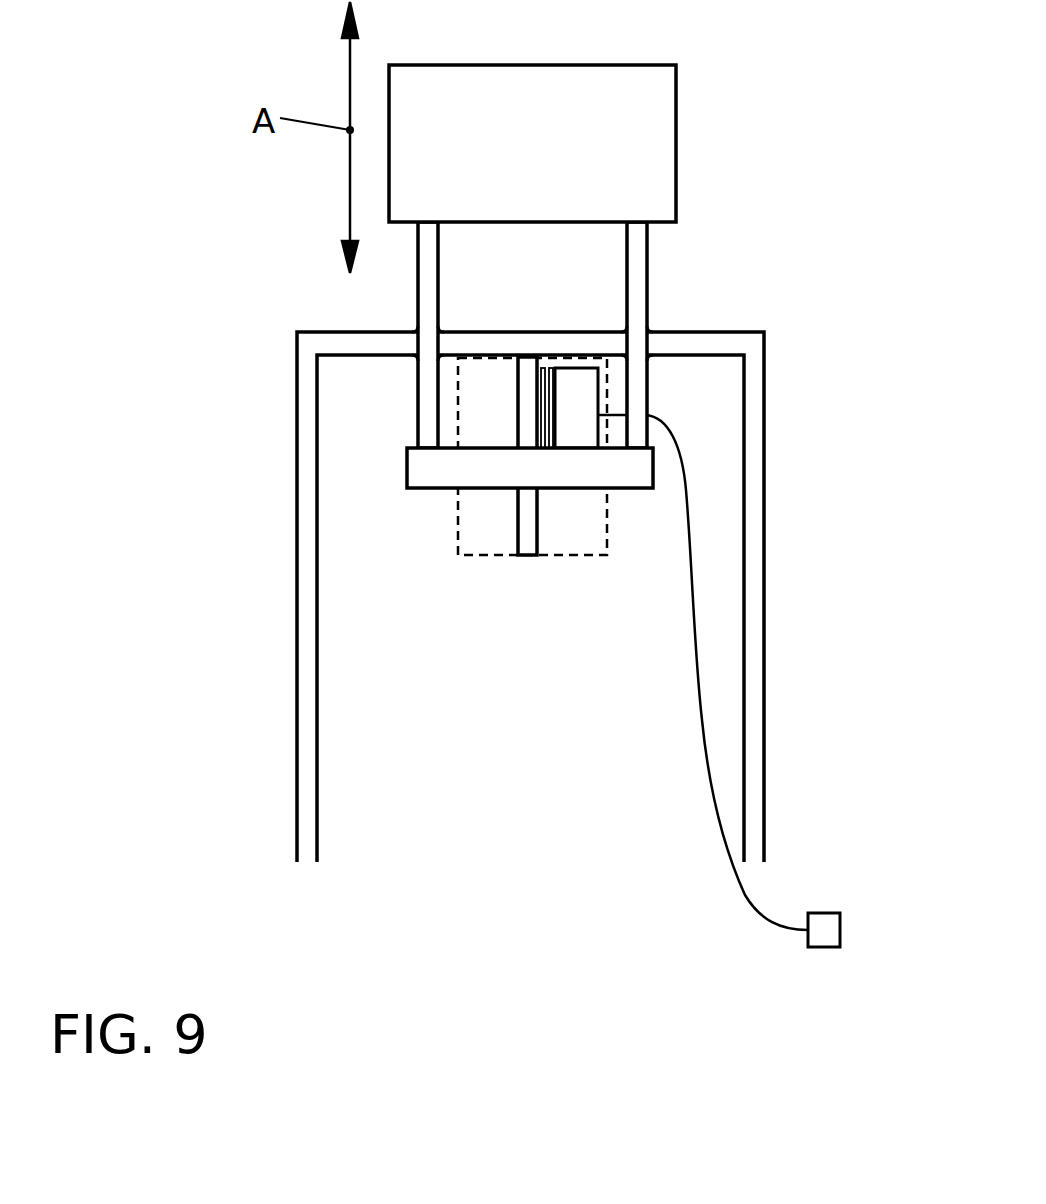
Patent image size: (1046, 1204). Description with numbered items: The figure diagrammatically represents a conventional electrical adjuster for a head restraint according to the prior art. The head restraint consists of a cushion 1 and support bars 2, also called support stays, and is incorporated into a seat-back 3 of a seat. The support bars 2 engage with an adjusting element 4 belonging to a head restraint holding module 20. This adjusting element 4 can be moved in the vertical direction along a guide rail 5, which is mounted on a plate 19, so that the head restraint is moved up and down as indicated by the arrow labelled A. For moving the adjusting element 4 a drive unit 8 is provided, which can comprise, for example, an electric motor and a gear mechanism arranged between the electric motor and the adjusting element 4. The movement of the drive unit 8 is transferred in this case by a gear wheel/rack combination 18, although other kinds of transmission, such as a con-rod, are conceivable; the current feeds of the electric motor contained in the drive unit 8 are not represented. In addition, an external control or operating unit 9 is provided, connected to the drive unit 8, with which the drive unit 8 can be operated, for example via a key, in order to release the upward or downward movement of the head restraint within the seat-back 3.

The cushion 1 is at (658, 153).
The support bars 2 is at (427, 285).
The seat-back 3 is at (757, 457).
The adjusting element 4 is at (418, 477).
The guide rail 5 is at (533, 535).
The drive unit 8 is at (575, 377).
The external control or operating unit 9 is at (827, 927).
The gear wheel/rack combination 18 is at (545, 408).
The plate 19 is at (470, 555).
The head restraint holding module 20 is at (370, 427).